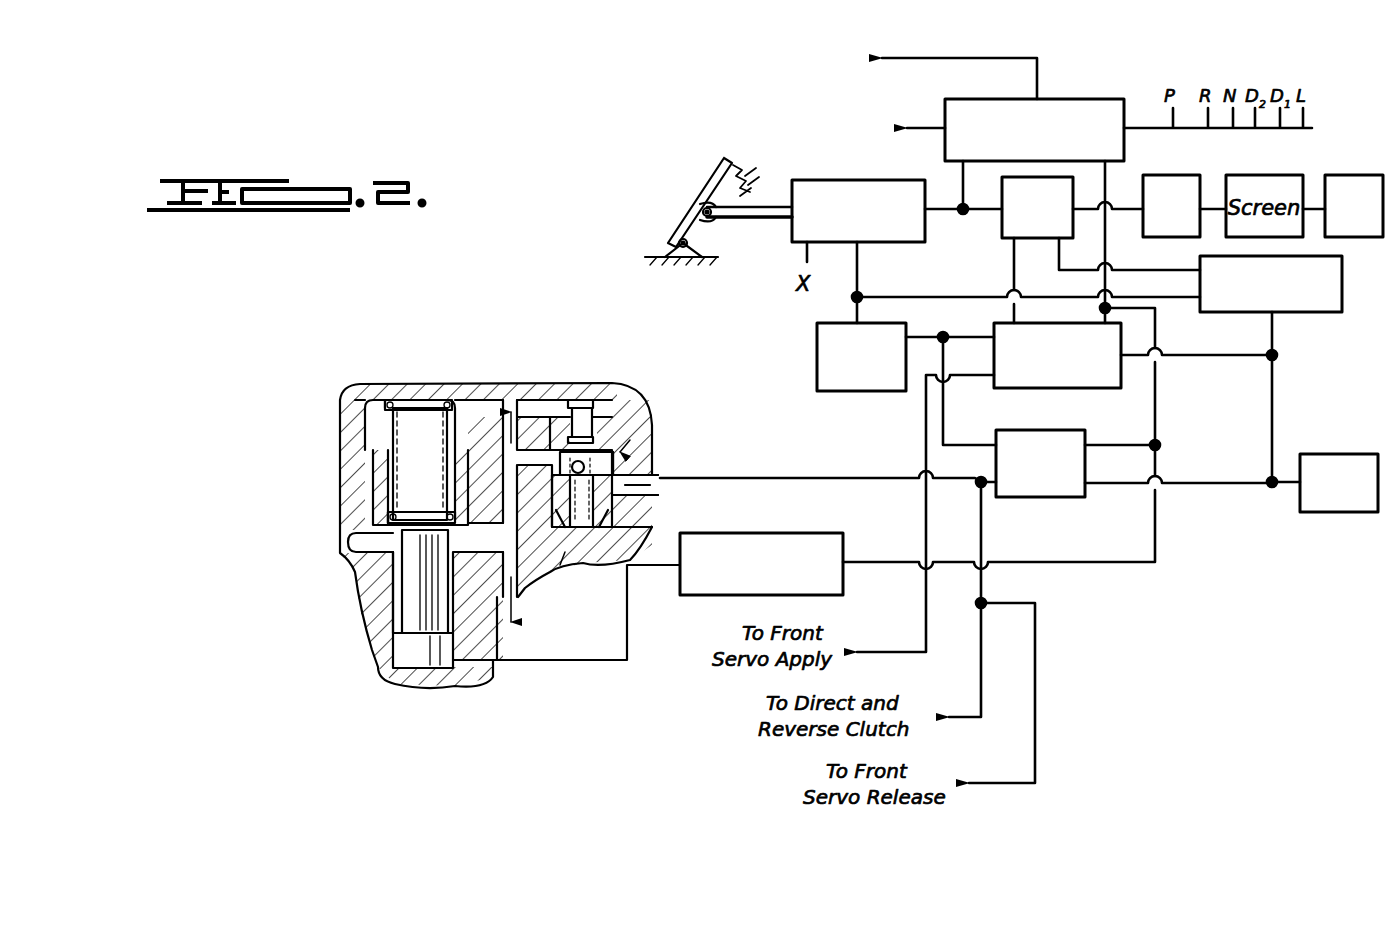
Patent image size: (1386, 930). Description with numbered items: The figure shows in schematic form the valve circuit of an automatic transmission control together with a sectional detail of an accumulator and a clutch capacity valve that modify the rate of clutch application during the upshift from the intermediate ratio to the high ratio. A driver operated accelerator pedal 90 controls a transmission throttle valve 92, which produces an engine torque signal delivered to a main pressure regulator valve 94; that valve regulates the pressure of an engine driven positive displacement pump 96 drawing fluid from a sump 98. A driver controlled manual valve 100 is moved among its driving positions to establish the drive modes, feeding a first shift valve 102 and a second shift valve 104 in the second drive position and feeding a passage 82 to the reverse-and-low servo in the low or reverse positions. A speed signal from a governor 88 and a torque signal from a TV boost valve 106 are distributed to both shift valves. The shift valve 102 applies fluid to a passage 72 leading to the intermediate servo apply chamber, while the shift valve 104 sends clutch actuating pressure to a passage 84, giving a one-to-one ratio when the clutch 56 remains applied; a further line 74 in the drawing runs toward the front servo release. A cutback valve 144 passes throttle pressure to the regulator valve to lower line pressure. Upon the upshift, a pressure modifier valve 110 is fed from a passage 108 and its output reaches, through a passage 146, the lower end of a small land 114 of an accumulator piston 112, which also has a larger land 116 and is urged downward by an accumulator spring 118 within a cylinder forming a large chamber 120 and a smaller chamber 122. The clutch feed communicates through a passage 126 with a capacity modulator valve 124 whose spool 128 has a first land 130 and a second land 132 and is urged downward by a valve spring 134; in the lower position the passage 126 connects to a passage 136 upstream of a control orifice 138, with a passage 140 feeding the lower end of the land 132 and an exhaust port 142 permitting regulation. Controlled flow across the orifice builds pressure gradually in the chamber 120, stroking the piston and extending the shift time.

The clutch 56 is at (856, 73).
The passage 72 is at (926, 602).
The front servo release line 74 is at (1036, 646).
The passage 82 is at (934, 128).
The passage 84 is at (982, 519).
The governor 88 is at (1348, 454).
The accelerator pedal 90 is at (720, 170).
The transmission throttle valve 92 is at (930, 152).
The main pressure regulator valve 94 is at (1002, 232).
The positive displacement pump 96 is at (1170, 167).
The sump 98 is at (1350, 176).
The manual valve 100 is at (1084, 98).
The 1-2 shift valve 102 is at (1086, 389).
The 2-3 shift valve 104 is at (1062, 498).
The TV boost valve 106 is at (817, 331).
The passage 108 is at (1158, 530).
The pressure modifier valve 110 is at (778, 530).
The accumulator piston 112 is at (410, 615).
The small land 114 is at (410, 668).
The larger land 116 is at (375, 472).
The accumulator spring 118 is at (388, 412).
The large diameter accumulator pressure chamber 120 is at (412, 428).
The smaller diameter accumulator pressure chamber 122 is at (395, 568).
The capacity modulator valve 124 is at (650, 445).
The passage 126 is at (660, 468).
The valve spool 128 is at (613, 466).
The first land 130 is at (640, 440).
The second land 132 is at (605, 502).
The valve spring 134 is at (605, 406).
The passage 136 is at (540, 530).
The control orifice 138 is at (500, 425).
The passage 140 is at (570, 545).
The exhaust port 142 is at (656, 497).
The cutback valve 144 is at (1332, 314).
The passage 146 is at (478, 668).